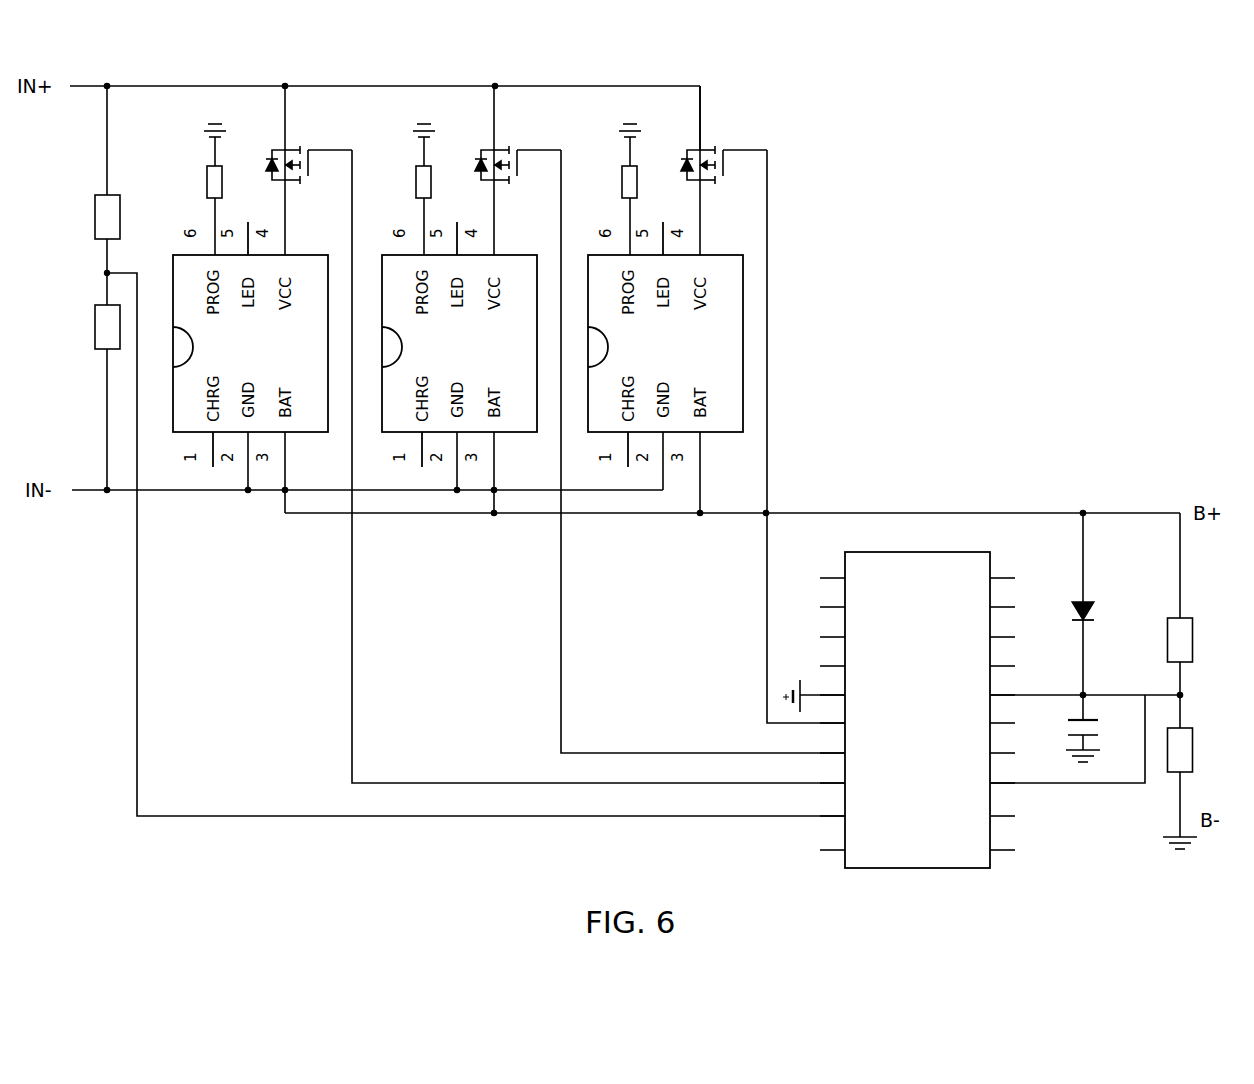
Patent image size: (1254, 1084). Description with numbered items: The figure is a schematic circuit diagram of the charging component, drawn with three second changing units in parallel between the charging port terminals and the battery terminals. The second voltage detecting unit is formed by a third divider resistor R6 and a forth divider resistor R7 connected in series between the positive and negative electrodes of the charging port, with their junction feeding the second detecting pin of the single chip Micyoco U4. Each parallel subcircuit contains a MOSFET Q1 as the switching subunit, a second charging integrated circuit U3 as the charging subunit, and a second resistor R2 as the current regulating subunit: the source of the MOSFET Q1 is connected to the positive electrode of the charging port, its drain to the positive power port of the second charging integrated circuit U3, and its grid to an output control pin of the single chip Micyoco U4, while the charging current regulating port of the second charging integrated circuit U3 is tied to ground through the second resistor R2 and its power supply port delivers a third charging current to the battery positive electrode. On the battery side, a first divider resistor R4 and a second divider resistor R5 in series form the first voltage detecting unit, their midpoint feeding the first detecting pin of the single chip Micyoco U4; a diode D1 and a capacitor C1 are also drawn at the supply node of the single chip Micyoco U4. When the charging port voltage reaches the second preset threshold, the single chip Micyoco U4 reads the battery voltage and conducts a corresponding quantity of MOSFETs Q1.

The second resistor R2 is at (403, 189).
The MOSFET Q1 is at (516, 170).
The second charging integrated circuit U3 is at (461, 344).
The single chip Micyoco U4 is at (917, 697).
The diode D1 is at (1098, 604).
The capacitor C1 is at (1096, 728).
The first divider resistor R4 is at (1198, 620).
The second divider resistor R5 is at (1198, 750).
The third divider resistor R6 is at (85, 195).
The forth divider resistor R7 is at (447, 544).